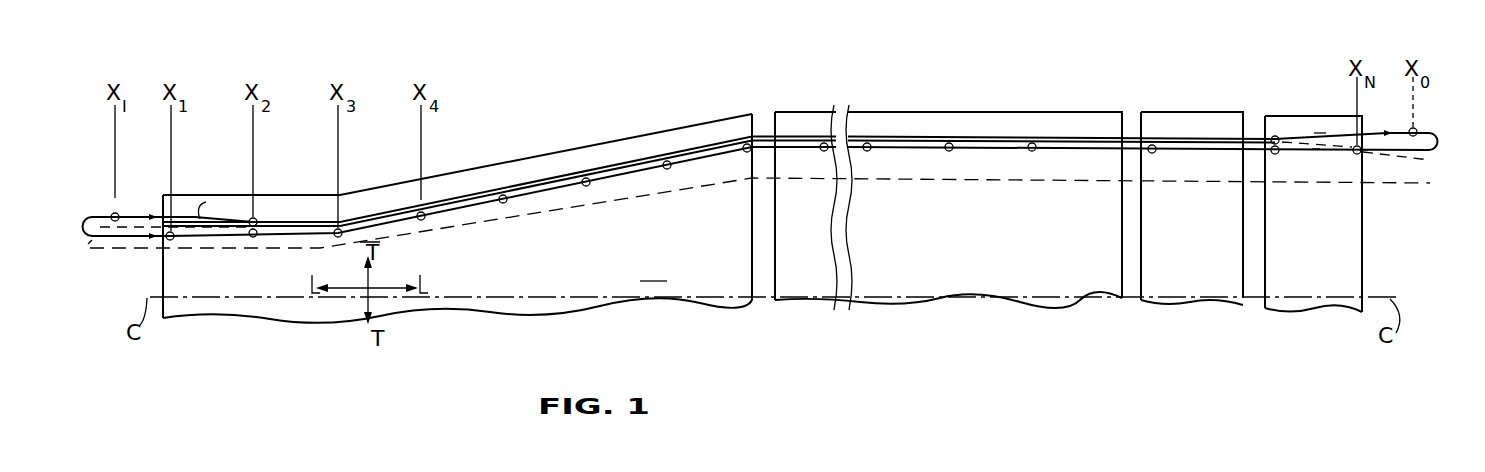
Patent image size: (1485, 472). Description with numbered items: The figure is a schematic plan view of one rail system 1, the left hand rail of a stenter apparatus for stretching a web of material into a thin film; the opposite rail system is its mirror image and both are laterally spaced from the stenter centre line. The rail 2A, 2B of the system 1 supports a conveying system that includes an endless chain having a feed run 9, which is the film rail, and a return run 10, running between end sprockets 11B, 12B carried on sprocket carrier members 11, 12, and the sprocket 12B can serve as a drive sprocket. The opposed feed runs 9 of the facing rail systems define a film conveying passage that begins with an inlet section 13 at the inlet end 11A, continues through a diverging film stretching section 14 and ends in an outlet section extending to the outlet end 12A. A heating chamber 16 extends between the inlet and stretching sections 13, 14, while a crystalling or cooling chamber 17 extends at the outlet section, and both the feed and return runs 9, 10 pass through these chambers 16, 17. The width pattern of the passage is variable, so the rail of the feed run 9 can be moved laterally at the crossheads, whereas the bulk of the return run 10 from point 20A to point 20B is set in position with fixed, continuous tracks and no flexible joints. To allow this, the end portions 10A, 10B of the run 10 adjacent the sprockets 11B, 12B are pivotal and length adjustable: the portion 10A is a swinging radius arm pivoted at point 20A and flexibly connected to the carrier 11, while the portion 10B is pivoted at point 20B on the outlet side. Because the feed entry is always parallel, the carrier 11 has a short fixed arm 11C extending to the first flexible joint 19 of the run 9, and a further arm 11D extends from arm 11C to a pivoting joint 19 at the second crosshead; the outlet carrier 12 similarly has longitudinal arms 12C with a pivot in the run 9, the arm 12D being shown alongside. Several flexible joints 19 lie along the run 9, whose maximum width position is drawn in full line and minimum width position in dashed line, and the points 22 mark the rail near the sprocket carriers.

The rail system 1 is at (948, 306).
The rail 2A is at (567, 174).
The rail 2B is at (719, 184).
The feed run 9 is at (470, 204).
The return run 10 is at (483, 167).
The end portion of the return run 10A is at (183, 218).
The end portion of the return run 10B is at (1320, 134).
The sprocket carrier member 11 is at (95, 216).
The inlet end 11A is at (90, 244).
The end sprocket 11B is at (112, 213).
The fixed arm 11C is at (128, 239).
The further arm 11D is at (224, 208).
The sprocket carrier member 12 is at (1440, 139).
The outlet end 12A is at (1435, 160).
The end sprocket 12B is at (1430, 123).
The longitudinal arm 12C is at (1364, 153).
The outlet lever upper edge 12D is at (1316, 152).
The inlet section 13 is at (246, 307).
The film stretching section 14 is at (654, 269).
The heating chamber 16 is at (701, 123).
The crystalling or cooling chamber 17 is at (777, 292).
The flexible joint 19 is at (250, 226).
The pivot point 20A is at (257, 219).
The pivot point 20B is at (1272, 136).
The belt attachment points 22 is at (154, 215).